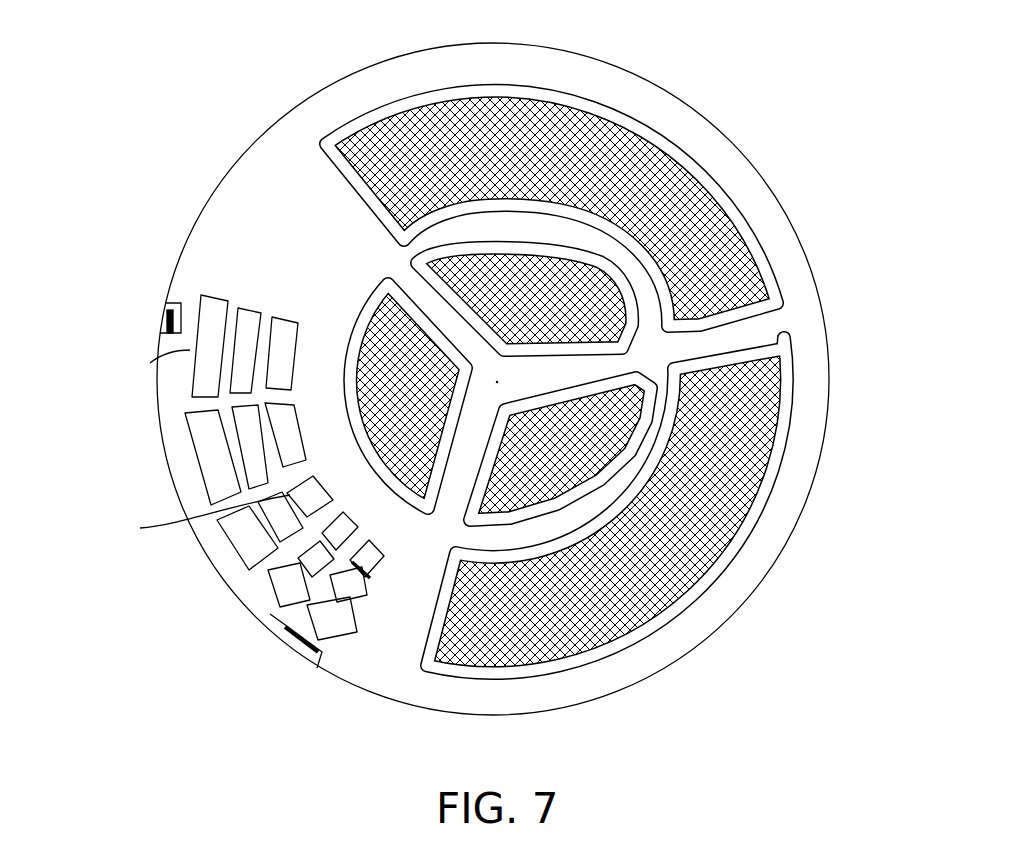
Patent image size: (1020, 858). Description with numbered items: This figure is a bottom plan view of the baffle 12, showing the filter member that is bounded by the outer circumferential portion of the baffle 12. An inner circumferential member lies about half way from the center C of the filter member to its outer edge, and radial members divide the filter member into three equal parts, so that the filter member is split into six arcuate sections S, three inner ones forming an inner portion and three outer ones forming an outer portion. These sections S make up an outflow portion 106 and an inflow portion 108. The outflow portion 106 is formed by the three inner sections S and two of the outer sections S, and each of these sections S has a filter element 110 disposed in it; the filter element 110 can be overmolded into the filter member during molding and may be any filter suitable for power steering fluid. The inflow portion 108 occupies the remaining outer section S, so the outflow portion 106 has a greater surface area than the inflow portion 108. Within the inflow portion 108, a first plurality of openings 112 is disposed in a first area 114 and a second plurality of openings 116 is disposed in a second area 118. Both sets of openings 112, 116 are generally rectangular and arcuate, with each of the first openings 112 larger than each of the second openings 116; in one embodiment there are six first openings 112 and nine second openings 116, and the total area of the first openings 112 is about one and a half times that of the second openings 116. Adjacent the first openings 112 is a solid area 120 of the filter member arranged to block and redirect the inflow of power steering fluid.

The baffle 12 is at (510, 379).
The outflow portion 106 is at (778, 237).
The filter element 110 is at (395, 332).
The sections S is at (563, 280).
The center C is at (490, 380).
The first plurality of openings 112 is at (250, 307).
The first area 114 is at (160, 390).
The second plurality of openings 116 is at (310, 495).
The second area 118 is at (272, 617).
The inflow portion 108 is at (237, 578).
The solid area 120 is at (237, 182).